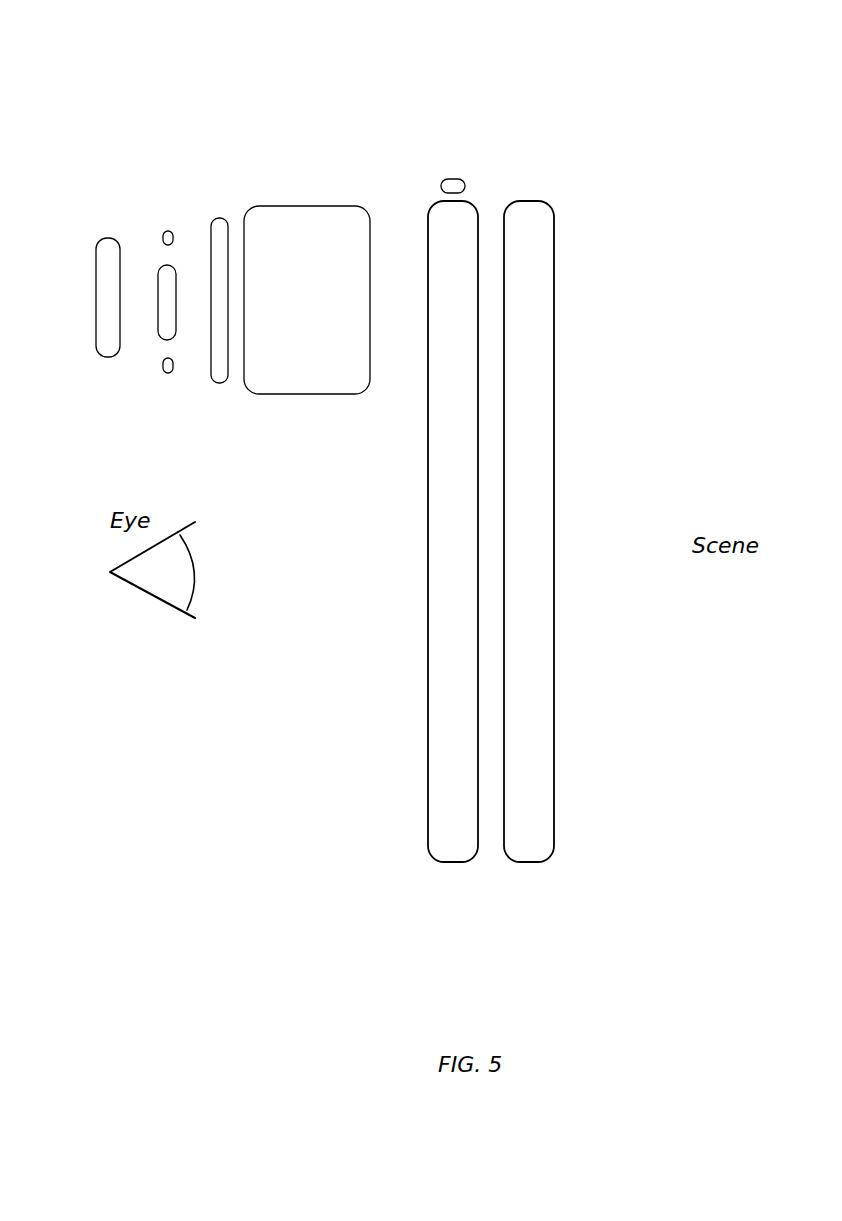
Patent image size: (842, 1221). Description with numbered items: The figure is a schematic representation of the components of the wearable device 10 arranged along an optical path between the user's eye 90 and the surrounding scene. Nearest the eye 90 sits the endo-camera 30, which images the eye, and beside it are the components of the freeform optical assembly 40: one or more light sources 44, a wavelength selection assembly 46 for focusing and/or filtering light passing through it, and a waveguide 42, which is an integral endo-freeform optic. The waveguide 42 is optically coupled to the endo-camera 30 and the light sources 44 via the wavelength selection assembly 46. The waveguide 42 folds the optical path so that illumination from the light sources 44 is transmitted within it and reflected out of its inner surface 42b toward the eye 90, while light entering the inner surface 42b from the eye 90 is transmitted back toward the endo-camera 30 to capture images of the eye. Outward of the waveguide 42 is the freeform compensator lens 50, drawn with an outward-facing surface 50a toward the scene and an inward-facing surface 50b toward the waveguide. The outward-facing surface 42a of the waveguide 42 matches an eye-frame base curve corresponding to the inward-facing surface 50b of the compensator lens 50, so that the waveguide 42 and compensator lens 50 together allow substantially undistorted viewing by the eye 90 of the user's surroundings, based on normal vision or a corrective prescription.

The device 10 is at (584, 222).
The endo-camera 30 is at (160, 262).
The freeform optical assembly 40 is at (488, 62).
The waveguide 42 is at (428, 798).
The outward-facing surface 42a is at (479, 710).
The inner surface 42b is at (428, 665).
The light sources 44 is at (445, 180).
The wavelength selection assembly 46 is at (216, 381).
The freeform compensator lens 50 is at (557, 828).
The outward-facing surface of compensator lens 50a is at (555, 480).
The inward-facing surface 50b is at (503, 448).
The eye 90 is at (160, 600).